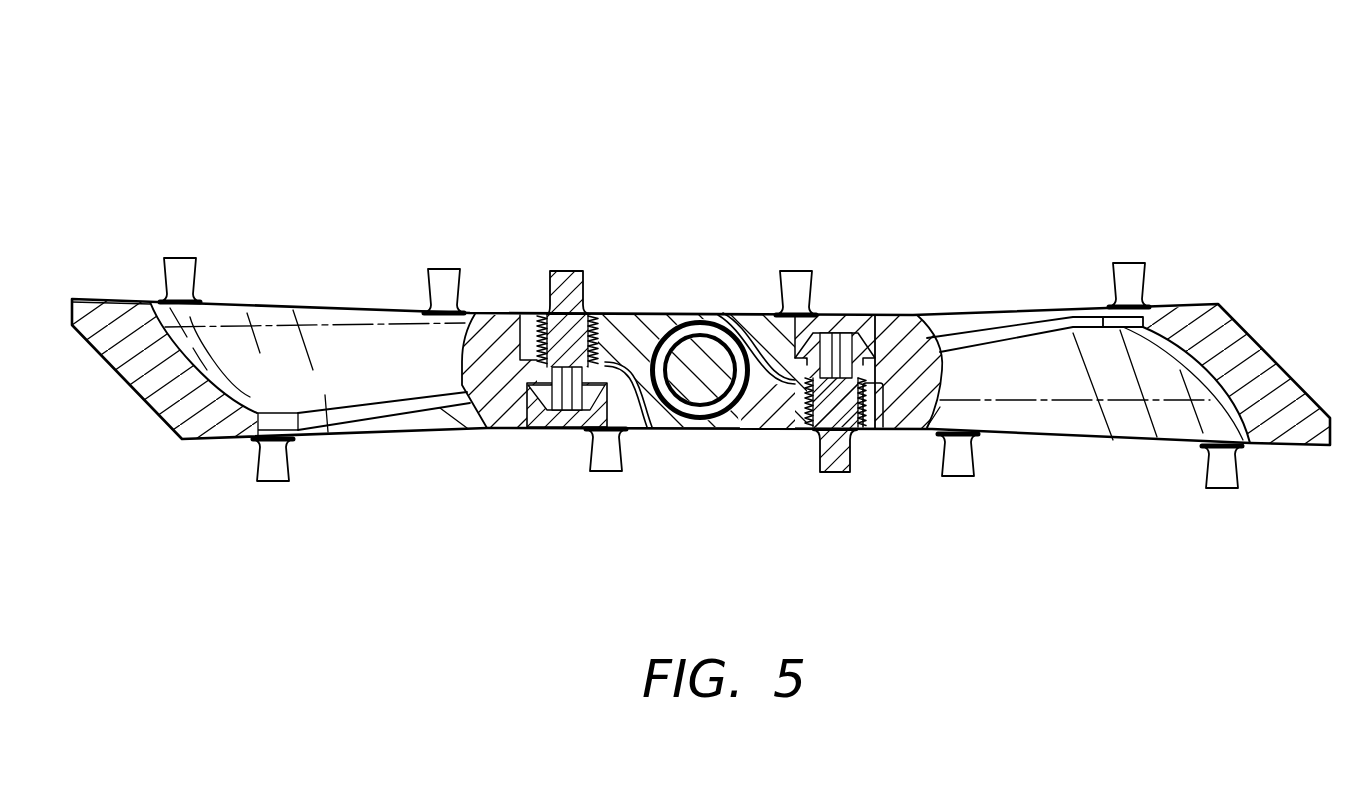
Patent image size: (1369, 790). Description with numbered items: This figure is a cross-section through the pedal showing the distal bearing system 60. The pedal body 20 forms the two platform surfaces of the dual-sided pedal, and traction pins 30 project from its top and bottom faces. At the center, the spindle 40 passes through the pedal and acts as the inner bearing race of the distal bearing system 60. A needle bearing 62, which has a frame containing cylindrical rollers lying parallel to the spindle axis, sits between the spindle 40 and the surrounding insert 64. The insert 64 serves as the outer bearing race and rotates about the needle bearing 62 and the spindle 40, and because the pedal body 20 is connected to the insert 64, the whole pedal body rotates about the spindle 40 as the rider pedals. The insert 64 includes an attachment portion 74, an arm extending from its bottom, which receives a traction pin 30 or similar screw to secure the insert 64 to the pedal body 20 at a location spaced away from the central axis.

The distal bearing system 60 is at (867, 114).
The pedal body 20 is at (895, 330).
The traction pins 30 is at (443, 277).
The spindle 40 is at (722, 342).
The needle bearing 62 is at (698, 412).
The insert 64 is at (653, 330).
The attachment portion 74 is at (770, 402).